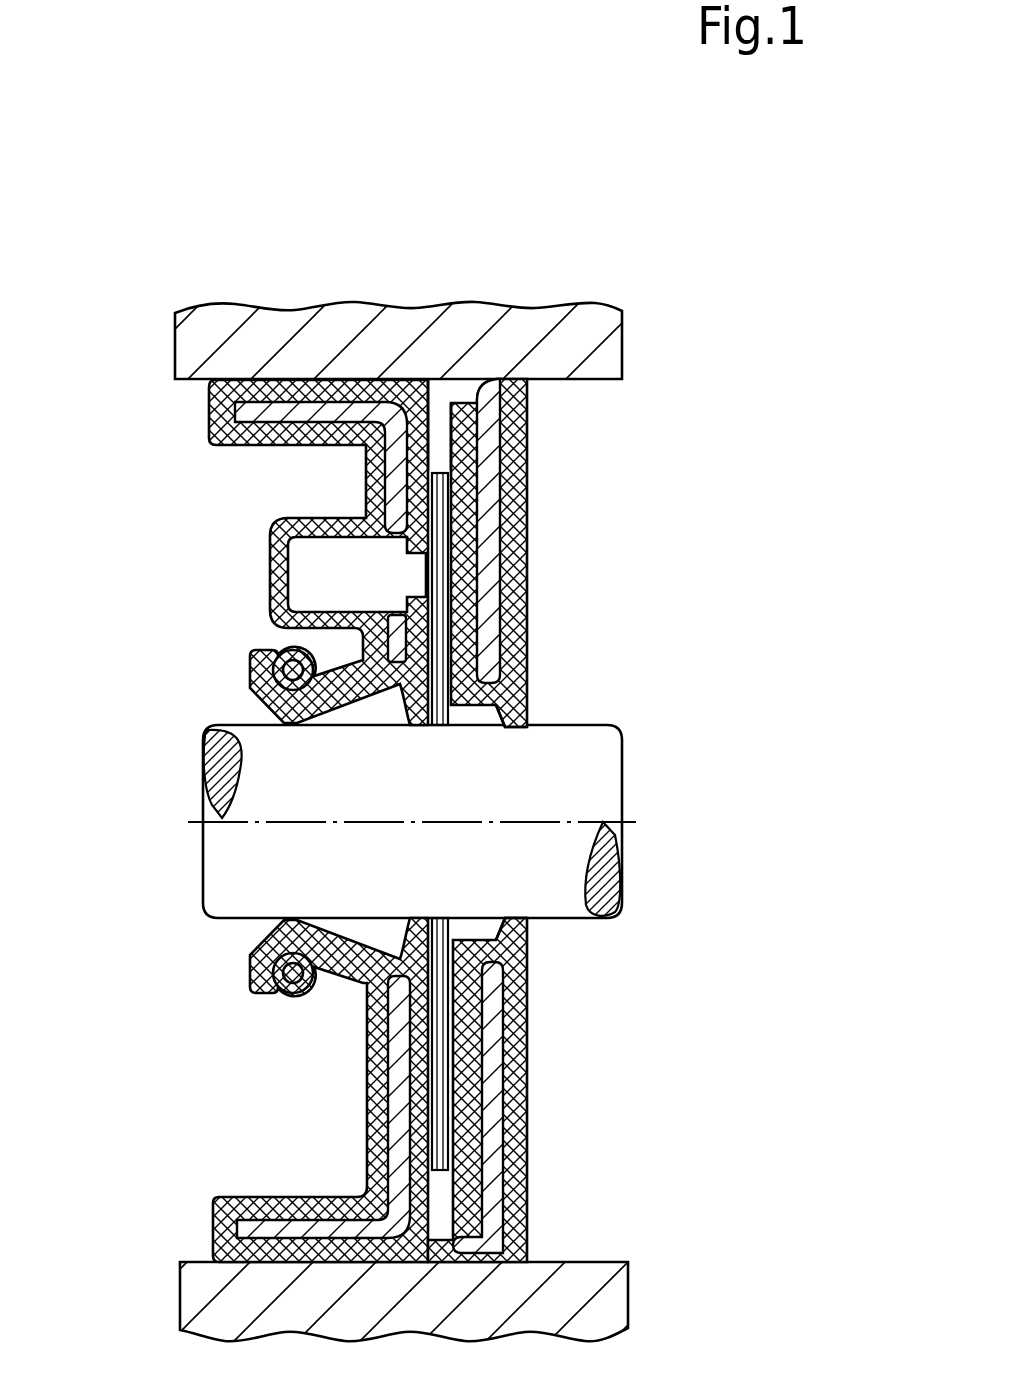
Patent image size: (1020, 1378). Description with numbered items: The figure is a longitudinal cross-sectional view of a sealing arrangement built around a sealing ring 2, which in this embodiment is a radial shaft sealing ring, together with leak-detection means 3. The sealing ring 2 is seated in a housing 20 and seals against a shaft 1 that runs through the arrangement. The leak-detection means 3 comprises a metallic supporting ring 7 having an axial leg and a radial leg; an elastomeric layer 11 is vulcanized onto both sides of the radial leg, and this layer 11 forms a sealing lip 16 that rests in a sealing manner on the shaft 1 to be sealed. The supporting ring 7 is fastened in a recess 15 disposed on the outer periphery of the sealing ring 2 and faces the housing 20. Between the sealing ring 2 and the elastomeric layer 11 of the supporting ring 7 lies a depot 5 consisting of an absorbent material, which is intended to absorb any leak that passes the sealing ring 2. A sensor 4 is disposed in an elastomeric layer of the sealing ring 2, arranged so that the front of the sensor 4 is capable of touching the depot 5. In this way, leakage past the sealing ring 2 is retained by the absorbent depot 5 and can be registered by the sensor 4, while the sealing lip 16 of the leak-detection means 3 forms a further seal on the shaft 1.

The shaft 1 is at (265, 872).
The sealing ring 2 is at (248, 821).
The leak-detection means 3 is at (586, 820).
The sensor 4 is at (320, 573).
The depot 5 is at (437, 727).
The supporting ring 7 is at (490, 623).
The elastomeric layer 11 is at (515, 522).
The recess 15 is at (428, 380).
The sealing lip 16 is at (523, 717).
The housing 20 is at (533, 340).